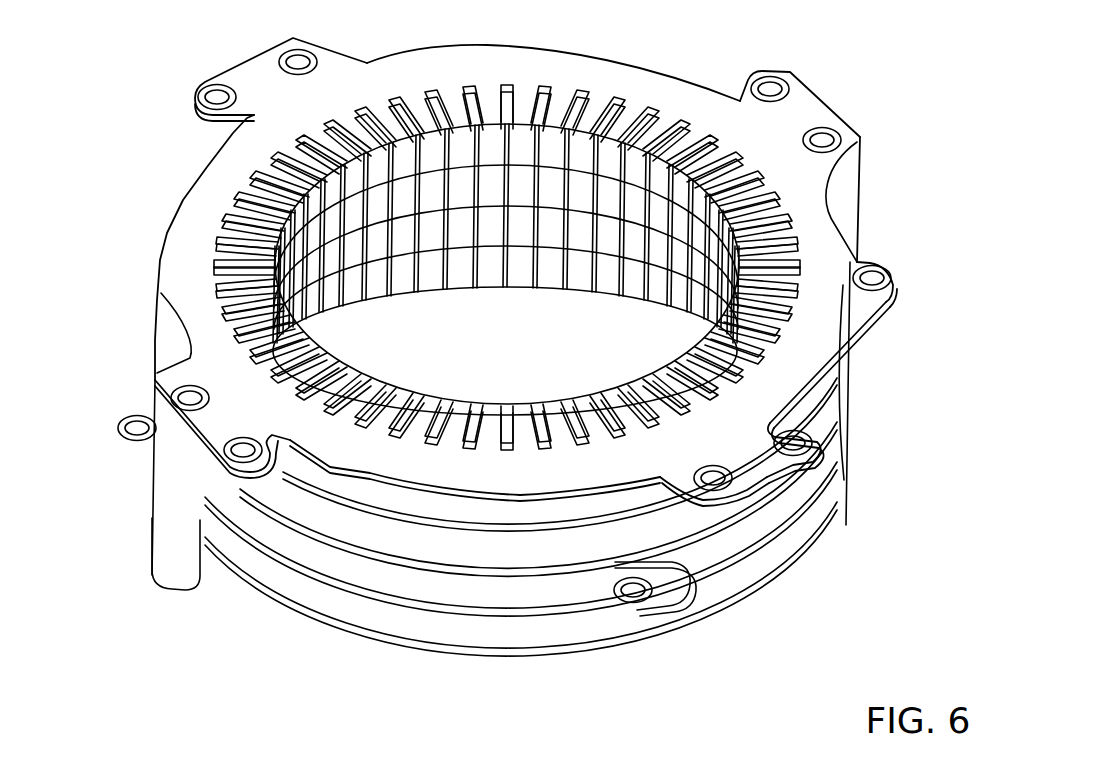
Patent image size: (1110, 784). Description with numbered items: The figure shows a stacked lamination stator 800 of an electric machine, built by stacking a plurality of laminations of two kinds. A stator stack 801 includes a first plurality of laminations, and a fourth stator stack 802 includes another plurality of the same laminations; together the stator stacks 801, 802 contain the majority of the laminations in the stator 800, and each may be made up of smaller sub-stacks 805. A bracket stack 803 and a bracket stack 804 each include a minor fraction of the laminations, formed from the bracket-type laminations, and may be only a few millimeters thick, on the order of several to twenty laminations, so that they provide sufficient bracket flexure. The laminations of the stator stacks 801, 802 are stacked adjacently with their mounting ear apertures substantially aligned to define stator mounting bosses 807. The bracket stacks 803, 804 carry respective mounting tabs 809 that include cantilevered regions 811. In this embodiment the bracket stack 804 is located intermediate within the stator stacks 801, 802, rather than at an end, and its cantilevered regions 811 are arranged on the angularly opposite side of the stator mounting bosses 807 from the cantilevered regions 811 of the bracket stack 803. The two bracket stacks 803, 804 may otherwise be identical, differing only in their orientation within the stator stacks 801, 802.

The stacked lamination stator 800 is at (672, 44).
The stator stack 801 is at (830, 403).
The fourth stator stack 802 is at (762, 562).
The bracket stack 803 is at (820, 315).
The bracket stack 804 is at (840, 518).
The sub-stacks 805 is at (560, 480).
The stator mounting bosses 807 is at (845, 180).
The mounting tabs 809 is at (245, 58).
The cantilevered regions 811 is at (193, 93).